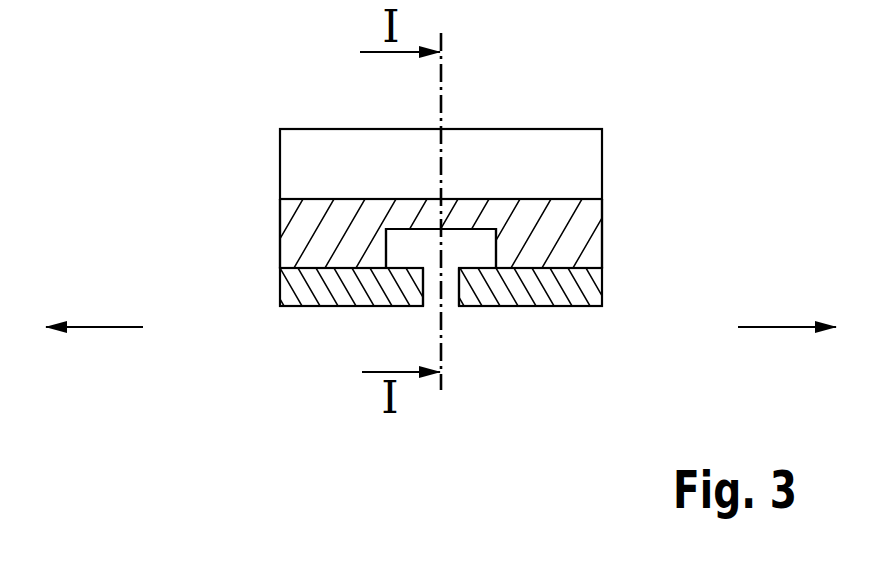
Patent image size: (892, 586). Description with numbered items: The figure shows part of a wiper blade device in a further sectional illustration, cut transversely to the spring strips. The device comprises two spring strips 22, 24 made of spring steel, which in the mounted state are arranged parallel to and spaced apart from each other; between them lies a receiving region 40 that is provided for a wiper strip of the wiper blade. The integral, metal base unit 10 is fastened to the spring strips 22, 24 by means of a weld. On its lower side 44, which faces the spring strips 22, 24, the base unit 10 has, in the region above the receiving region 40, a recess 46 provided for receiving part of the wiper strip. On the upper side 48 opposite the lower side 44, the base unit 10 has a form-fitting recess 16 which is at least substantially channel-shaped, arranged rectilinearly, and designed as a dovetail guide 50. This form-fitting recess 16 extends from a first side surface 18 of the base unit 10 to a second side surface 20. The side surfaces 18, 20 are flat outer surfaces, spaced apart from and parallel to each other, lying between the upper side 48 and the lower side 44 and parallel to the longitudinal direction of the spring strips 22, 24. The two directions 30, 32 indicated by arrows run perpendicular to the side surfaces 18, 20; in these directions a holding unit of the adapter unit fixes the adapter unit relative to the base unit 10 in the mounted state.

The base unit 10 is at (586, 220).
The form-fitting recess 16 is at (514, 157).
The dovetail guide 50 is at (572, 155).
The first side surface 18 is at (279, 243).
The second side surface 20 is at (607, 246).
The spring strip 22 is at (520, 293).
The spring strip 24 is at (324, 292).
The direction 30 is at (99, 330).
The direction 32 is at (779, 330).
The receiving region 40 is at (452, 313).
The lower side 44 is at (574, 275).
The recess 46 is at (412, 246).
The upper side 48 is at (532, 126).